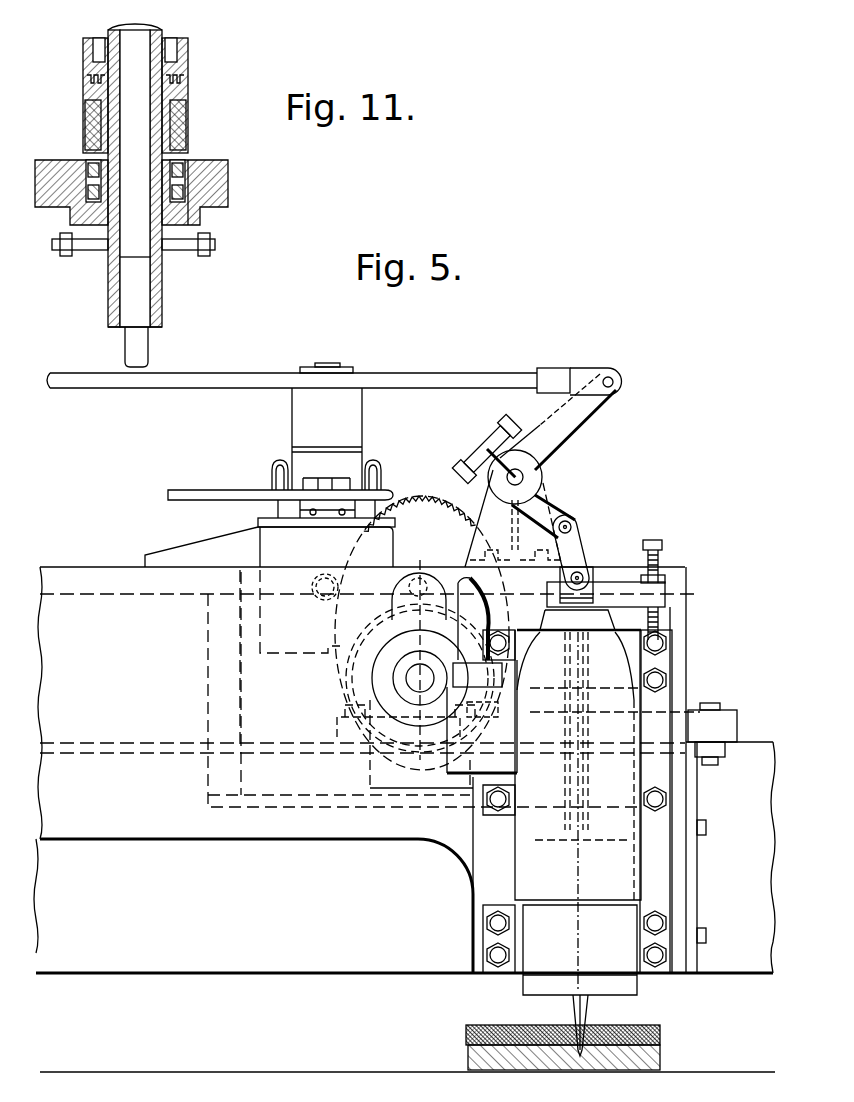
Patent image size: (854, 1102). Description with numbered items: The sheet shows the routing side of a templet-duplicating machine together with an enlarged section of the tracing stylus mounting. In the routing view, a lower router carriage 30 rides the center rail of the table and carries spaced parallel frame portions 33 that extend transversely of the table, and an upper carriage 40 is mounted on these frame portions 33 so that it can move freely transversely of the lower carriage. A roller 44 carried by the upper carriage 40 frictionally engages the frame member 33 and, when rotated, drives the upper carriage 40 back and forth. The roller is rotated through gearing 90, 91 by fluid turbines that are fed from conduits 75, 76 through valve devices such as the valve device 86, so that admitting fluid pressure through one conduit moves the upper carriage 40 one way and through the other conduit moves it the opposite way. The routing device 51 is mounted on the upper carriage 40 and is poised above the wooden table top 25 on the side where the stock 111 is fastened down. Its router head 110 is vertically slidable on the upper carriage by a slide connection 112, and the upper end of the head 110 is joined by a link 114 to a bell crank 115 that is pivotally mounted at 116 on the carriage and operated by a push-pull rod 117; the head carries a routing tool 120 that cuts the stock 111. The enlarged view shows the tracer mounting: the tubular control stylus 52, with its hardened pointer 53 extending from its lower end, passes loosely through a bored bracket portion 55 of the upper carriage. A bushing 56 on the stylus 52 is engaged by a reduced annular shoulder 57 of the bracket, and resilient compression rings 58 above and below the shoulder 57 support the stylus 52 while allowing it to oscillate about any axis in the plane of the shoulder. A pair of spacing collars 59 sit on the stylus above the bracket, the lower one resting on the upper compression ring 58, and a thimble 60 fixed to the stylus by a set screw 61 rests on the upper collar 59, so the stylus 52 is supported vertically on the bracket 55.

In FIG. 5, the wooden table top 25 is at (93, 1072).
In FIG. 5, the lower router carriage 30 is at (95, 983).
In FIG. 5, the frame portions 33 is at (752, 742).
In FIG. 5, the upper carriage 40 is at (88, 567).
In FIG. 5, the roller 44 is at (356, 681).
In FIG. 5, the routing device 51 is at (668, 885).
In FIG. 11, the control stylus 52 is at (163, 292).
In FIG. 11, the pointer 53 is at (124, 343).
In FIG. 11, the bracket portion 55 is at (222, 200).
In FIG. 11, the bushing 56 is at (165, 116).
In FIG. 11, the reduced annular shoulder 57 is at (180, 183).
In FIG. 11, the resilient compression rings 58 is at (90, 192).
In FIG. 11, the spacing collars 59 is at (90, 132).
In FIG. 11, the thimble 60 is at (190, 80).
In FIG. 11, the set screw 61 is at (115, 72).
In FIG. 5, the conduit 75 is at (178, 494).
In FIG. 5, the conduit 76 is at (226, 494).
In FIG. 5, the valve device 86 is at (305, 412).
In FIG. 5, the gearing 90 is at (342, 619).
In FIG. 5, the gearing 91 is at (342, 697).
In FIG. 5, the router head 110 is at (607, 700).
In FIG. 5, the stock 111 is at (660, 1035).
In FIG. 5, the slide connection 112 is at (636, 651).
In FIG. 5, the link 114 is at (578, 548).
In FIG. 5, the bell crank 115 is at (565, 433).
In FIG. 5, the pivot 116 is at (522, 477).
In FIG. 5, the push-pull rod 117 is at (620, 380).
In FIG. 5, the routing tool 120 is at (590, 1012).